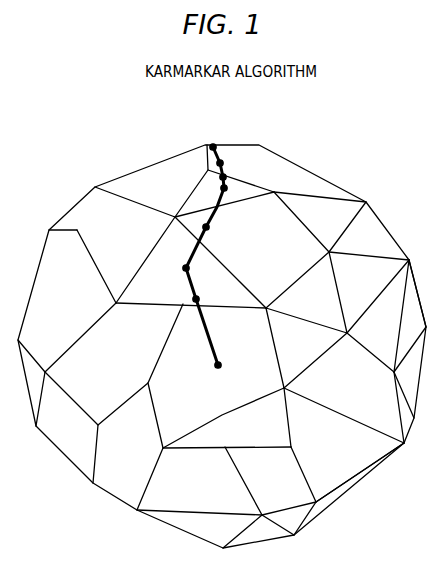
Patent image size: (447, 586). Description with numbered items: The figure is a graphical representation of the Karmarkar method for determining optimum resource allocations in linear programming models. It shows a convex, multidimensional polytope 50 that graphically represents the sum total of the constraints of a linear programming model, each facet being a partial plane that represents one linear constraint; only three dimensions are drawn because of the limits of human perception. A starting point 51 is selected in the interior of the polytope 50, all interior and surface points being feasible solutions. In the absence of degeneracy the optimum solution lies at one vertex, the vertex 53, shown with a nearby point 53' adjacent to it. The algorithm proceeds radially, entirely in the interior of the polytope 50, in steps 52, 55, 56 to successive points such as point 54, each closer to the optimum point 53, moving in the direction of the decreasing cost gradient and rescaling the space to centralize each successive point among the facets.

The polytope 50 is at (100, 512).
The starting point 51 is at (219, 366).
The step 52 is at (206, 325).
The vertex 53 is at (201, 139).
The near-optimal point 53' is at (236, 162).
The successive point 54 is at (185, 269).
The step 55 is at (213, 215).
The step 56 is at (215, 183).